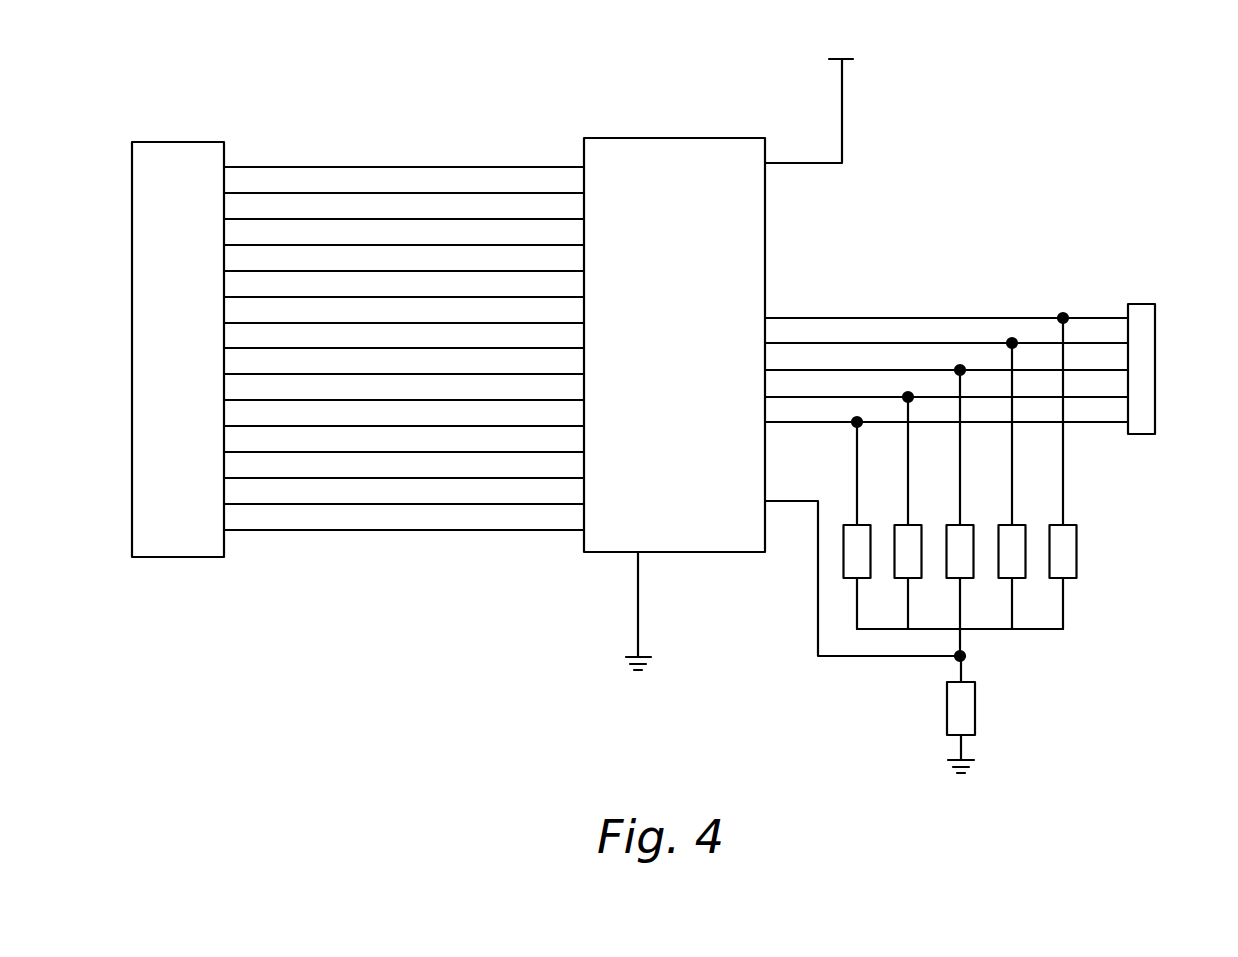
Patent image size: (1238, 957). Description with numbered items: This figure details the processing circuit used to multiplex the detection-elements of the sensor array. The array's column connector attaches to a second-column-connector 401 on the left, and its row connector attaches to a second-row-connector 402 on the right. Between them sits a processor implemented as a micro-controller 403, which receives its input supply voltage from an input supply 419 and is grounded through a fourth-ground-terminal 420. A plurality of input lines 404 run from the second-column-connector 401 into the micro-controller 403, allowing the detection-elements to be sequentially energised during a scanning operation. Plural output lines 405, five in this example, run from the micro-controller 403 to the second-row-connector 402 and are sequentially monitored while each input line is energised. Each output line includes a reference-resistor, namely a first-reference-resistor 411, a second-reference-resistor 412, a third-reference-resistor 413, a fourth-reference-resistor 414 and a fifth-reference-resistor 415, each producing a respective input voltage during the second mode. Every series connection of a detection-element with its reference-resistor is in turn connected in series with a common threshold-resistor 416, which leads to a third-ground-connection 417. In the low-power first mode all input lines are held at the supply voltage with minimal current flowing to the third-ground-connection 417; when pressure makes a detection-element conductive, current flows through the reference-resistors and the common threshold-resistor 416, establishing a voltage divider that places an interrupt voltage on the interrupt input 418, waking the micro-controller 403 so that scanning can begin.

The second-column-connector 401 is at (180, 147).
The second-row-connector 402 is at (1142, 303).
The micro-controller 403 is at (674, 345).
The input lines 404 is at (406, 564).
The output lines 405 is at (914, 270).
The first-reference-resistor 411 is at (850, 531).
The second-reference-resistor 412 is at (901, 531).
The third-reference-resistor 413 is at (953, 531).
The fourth-reference-resistor 414 is at (1005, 531).
The fifth-reference-resistor 415 is at (1056, 531).
The common threshold-resistor 416 is at (976, 708).
The third-ground-connection 417 is at (973, 762).
The interrupt input 418 is at (797, 502).
The input supply 419 is at (842, 110).
The fourth-ground-terminal 420 is at (650, 660).